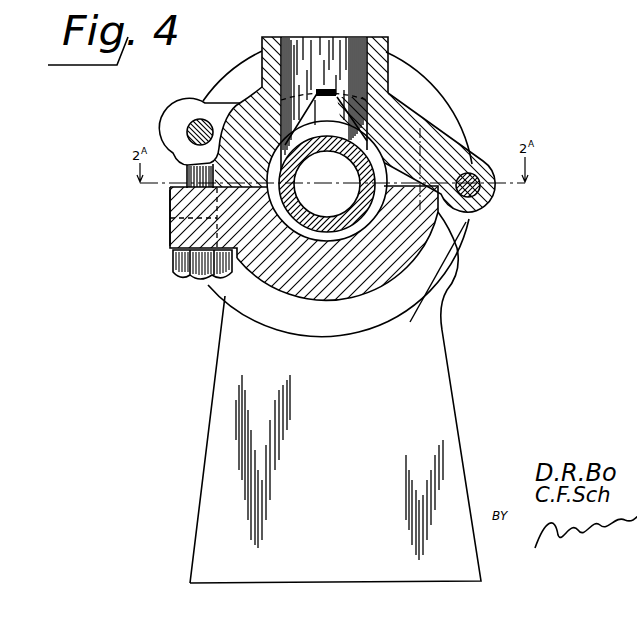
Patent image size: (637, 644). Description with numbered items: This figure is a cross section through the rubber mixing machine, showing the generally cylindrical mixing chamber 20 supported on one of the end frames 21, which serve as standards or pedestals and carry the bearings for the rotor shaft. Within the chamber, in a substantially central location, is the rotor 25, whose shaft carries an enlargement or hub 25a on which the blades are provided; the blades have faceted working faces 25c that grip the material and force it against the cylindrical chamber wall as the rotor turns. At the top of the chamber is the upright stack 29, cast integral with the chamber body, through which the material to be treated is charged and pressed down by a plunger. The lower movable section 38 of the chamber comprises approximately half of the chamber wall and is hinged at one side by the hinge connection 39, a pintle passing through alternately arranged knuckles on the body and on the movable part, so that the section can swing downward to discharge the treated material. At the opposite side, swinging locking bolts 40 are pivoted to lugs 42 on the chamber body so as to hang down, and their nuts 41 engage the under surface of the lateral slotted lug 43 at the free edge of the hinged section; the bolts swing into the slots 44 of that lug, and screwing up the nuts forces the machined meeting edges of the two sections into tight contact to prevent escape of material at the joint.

The mixing chamber 20 is at (410, 123).
The end frame 21 is at (335, 439).
The rotor 25 is at (327, 181).
The hub 25a is at (443, 294).
The faceted working face 25c is at (345, 105).
The stack 29 is at (387, 40).
The lower movable section 38 is at (463, 220).
The hinge connection 39 is at (482, 191).
The swinging locking bolt 40 is at (187, 168).
The nut 41 is at (182, 265).
The lug 42 is at (197, 104).
The slotted lug 43 is at (175, 232).
The slot 44 is at (187, 217).